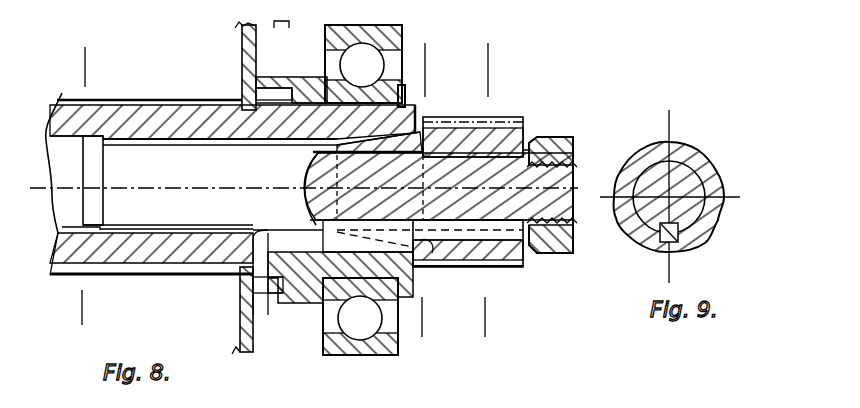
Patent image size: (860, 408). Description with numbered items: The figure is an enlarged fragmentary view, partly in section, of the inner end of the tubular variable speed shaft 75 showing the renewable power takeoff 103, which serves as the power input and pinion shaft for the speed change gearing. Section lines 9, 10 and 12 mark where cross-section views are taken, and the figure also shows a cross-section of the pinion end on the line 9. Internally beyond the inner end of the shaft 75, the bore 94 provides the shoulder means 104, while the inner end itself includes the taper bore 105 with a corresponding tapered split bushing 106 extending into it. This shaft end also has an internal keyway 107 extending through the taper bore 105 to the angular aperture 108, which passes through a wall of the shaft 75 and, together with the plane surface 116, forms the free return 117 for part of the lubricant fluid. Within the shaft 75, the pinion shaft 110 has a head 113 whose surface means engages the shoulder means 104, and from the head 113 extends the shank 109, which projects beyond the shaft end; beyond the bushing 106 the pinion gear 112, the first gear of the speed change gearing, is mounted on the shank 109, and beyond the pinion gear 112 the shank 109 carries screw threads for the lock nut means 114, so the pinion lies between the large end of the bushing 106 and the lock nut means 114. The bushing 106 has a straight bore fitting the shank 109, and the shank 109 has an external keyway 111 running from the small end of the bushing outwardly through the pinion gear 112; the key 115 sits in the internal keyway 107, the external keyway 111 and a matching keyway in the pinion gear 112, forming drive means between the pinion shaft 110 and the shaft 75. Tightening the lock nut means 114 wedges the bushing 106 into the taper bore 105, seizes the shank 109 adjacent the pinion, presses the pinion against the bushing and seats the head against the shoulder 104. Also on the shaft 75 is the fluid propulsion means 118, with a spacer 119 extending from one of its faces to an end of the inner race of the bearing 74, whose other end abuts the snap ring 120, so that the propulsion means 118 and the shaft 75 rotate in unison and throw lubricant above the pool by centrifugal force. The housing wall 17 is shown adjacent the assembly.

In FIG. 8, the section line 9— 9 is at (490, 70).
In FIG. 8, the section line 10— 10 is at (427, 67).
In FIG. 8, the section line 12— 12 is at (84, 63).
In FIG. 8, the spindle housing 17 is at (170, 100).
In FIG. 8, the bearing 74 is at (392, 35).
In FIG. 8, the variable speed shaft 75 is at (190, 281).
In FIG. 8, the bore 94 is at (50, 140).
In FIG. 8, the renewable power takeoff 103 is at (284, 16).
In FIG. 8, the shoulder means 104 is at (107, 138).
In FIG. 8, the taper bore 105 is at (405, 135).
In FIG. 8, the tapered split bushing 106 is at (418, 118).
In FIG. 8, the internal keyway 107 is at (313, 245).
In FIG. 8, the angular aperture 108 is at (265, 316).
In FIG. 8, the shank 109 is at (304, 178).
In FIG. 8, the pinion shaft 110 is at (510, 155).
In FIG. 9, the pinion shaft 110 is at (680, 176).
In FIG. 8, the external keyway 111 is at (512, 265).
In FIG. 8, the pinion gear 112 is at (488, 117).
In FIG. 9, the pinion gear 112 is at (688, 153).
In FIG. 8, the head 113 is at (83, 172).
In FIG. 8, the lock nut means 114 is at (551, 254).
In FIG. 8, the key 115 is at (424, 255).
In FIG. 9, the key 115 is at (690, 237).
In FIG. 8, the plane surface 116 is at (80, 228).
In FIG. 8, the free return 117 is at (251, 316).
In FIG. 8, the fluid propulsion means 118 is at (242, 48).
In FIG. 8, the spacer 119 is at (290, 78).
In FIG. 8, the snap ring 120 is at (401, 85).